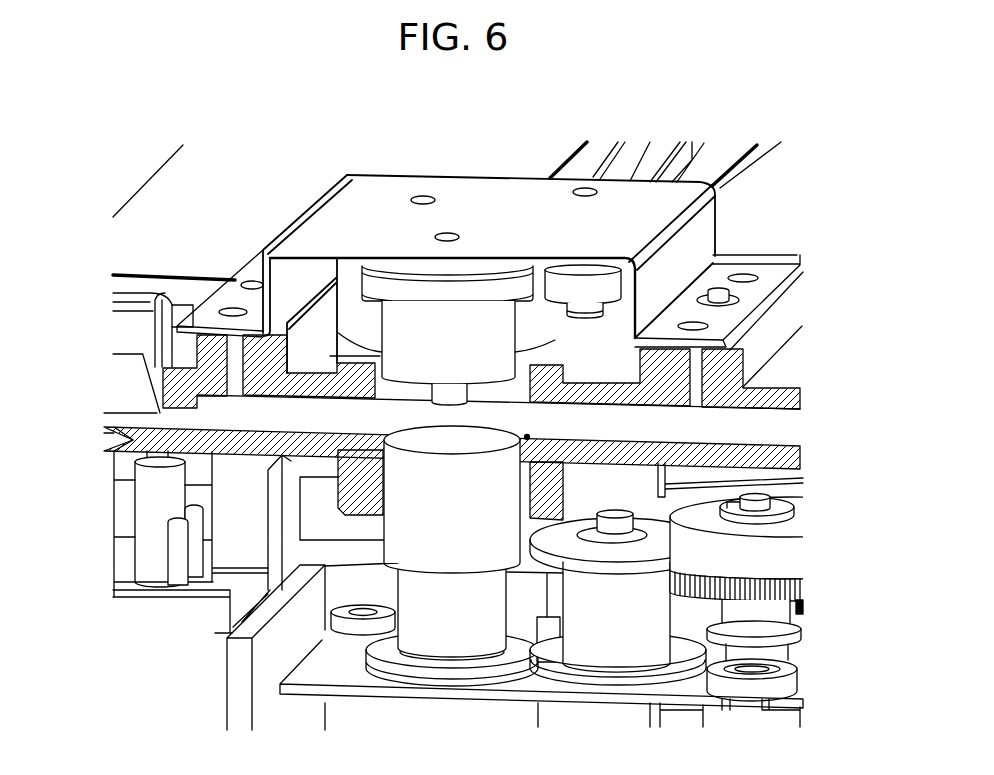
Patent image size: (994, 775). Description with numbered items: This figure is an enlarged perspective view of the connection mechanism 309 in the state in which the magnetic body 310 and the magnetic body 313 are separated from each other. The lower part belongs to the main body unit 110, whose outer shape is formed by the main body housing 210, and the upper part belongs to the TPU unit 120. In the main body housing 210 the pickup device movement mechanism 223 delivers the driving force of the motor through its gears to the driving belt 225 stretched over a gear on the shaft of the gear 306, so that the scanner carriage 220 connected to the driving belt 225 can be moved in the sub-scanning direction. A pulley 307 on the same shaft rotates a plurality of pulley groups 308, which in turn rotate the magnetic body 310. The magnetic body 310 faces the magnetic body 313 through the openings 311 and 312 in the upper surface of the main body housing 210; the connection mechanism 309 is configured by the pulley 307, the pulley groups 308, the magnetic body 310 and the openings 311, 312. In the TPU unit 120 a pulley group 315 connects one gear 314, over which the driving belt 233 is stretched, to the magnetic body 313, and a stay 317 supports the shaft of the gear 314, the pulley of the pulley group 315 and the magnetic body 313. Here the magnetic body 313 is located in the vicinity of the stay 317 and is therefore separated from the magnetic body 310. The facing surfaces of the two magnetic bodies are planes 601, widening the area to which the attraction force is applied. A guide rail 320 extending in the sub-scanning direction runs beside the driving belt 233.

The main body unit 110 is at (138, 659).
The TPU unit 120 is at (790, 318).
The main body housing 210 is at (115, 442).
The scanner carriage 220 is at (790, 405).
The pickup device movement mechanism 223 is at (795, 661).
The driving belt 225 is at (775, 618).
The driving belt 233 is at (718, 184).
The gear 306 is at (788, 592).
The pulley 307 is at (783, 558).
The pulley groups 308 is at (516, 689).
The connection mechanism 309 is at (390, 405).
The magnetic body 310 is at (405, 528).
The opening 311 is at (530, 436).
The opening 312 is at (547, 318).
The magnetic body 313 is at (403, 312).
The gear 314 is at (600, 312).
The pulley group 315 is at (327, 308).
The stay 317 is at (313, 213).
The guide rail 320 is at (588, 162).
The plane facing surface 601 is at (458, 435).